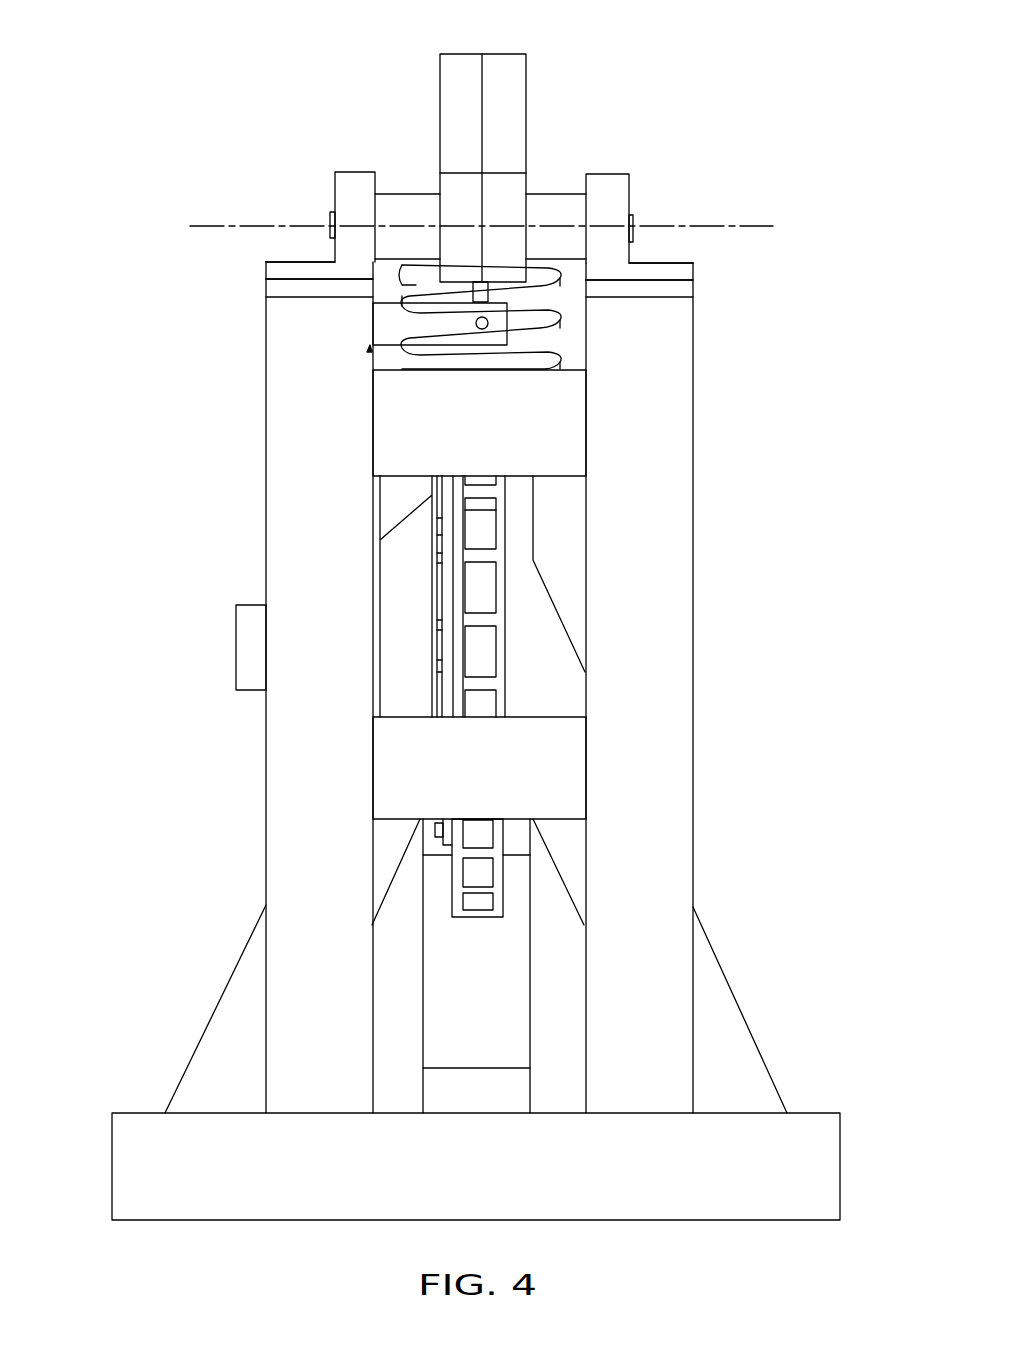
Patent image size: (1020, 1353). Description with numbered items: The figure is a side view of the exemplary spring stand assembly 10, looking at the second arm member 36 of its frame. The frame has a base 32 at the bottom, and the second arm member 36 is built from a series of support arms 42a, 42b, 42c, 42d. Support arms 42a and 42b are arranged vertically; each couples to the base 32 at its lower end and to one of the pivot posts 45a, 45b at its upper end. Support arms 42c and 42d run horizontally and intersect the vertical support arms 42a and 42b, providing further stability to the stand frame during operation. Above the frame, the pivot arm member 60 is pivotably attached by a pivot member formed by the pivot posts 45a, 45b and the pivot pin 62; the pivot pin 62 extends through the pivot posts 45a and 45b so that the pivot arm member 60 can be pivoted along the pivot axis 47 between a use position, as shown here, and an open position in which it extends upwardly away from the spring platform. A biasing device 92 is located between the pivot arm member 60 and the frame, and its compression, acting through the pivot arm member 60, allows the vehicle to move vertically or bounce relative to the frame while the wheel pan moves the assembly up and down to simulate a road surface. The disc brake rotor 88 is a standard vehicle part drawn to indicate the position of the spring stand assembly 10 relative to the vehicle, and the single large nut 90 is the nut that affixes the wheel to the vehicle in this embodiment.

The spring stand assembly 10 is at (270, 128).
The base 32 is at (112, 1158).
The second arm member 36 is at (713, 897).
The support arm 42a is at (273, 388).
The support arm 42b is at (693, 780).
The support arm 42c is at (567, 424).
The support arm 42d is at (383, 762).
The pivot post 45a is at (287, 262).
The pivot post 45b is at (676, 263).
The pivot axis 47 is at (762, 225).
The pivot arm member 60 is at (527, 118).
The pivot pin 62 is at (408, 194).
The disc brake rotor 88 is at (505, 677).
The single large nut 90 is at (236, 645).
The biasing device 92 is at (560, 320).